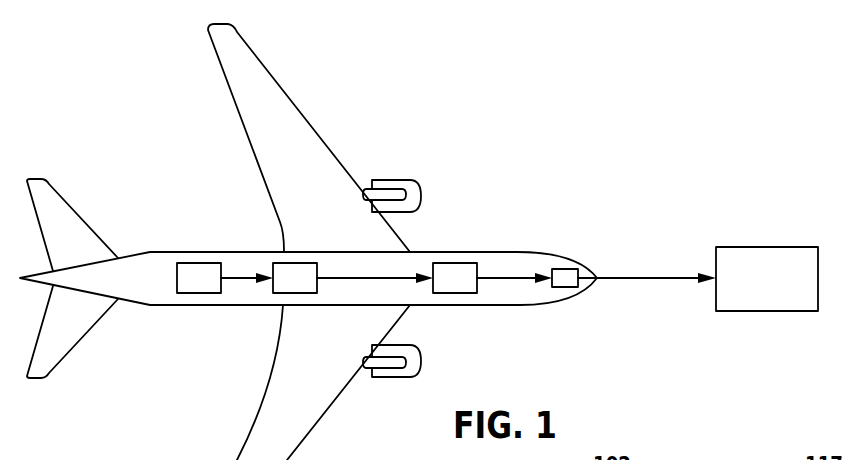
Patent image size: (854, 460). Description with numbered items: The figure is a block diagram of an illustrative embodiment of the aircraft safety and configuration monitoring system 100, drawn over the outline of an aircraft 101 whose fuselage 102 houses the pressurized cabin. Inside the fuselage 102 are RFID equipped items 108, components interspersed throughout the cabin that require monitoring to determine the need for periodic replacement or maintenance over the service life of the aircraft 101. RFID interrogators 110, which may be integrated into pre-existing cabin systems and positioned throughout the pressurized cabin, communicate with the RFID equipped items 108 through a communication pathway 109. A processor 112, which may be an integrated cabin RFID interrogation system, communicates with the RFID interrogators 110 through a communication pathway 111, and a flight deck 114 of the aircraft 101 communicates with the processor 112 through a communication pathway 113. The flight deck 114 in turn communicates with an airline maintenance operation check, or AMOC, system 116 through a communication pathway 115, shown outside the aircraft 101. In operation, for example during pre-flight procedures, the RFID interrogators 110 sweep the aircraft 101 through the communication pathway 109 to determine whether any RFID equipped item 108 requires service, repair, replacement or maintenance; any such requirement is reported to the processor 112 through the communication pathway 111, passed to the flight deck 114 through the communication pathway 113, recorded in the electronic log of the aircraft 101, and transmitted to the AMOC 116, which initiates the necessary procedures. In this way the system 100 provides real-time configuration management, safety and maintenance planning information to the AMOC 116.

The aircraft safety and configuration monitoring system 100 is at (487, 94).
The aircraft 101 is at (496, 240).
The fuselage 102 is at (242, 294).
The RFID equipped items 108 is at (200, 273).
The communication pathway 109 is at (246, 276).
The RFID interrogators 110 is at (297, 275).
The communication pathway 111 is at (335, 280).
The processor 112 is at (452, 273).
The communication pathway 113 is at (503, 280).
The flight deck 114 is at (562, 280).
The communication pathway 115 is at (640, 277).
The airline maintenance operation check (AMOC) system 116 is at (763, 247).